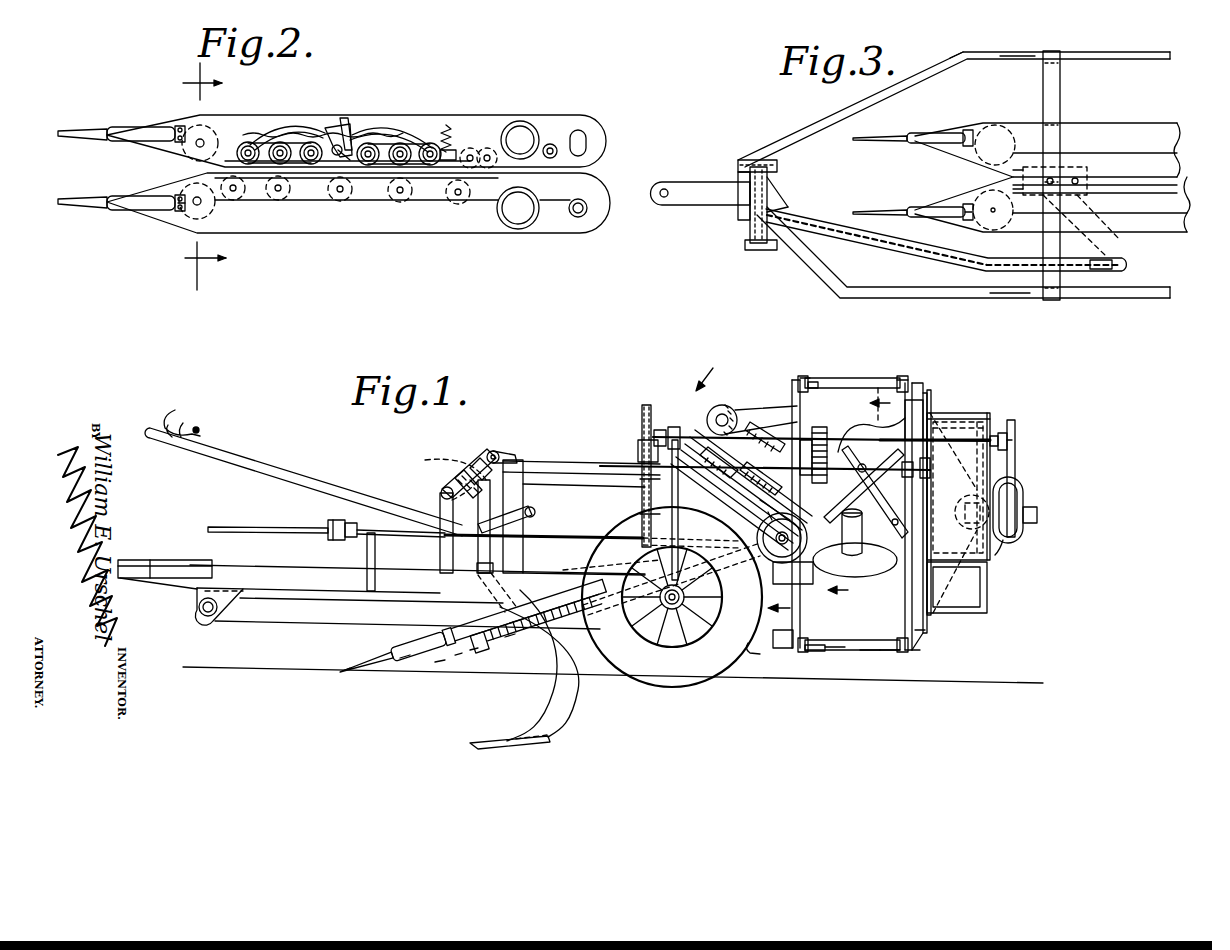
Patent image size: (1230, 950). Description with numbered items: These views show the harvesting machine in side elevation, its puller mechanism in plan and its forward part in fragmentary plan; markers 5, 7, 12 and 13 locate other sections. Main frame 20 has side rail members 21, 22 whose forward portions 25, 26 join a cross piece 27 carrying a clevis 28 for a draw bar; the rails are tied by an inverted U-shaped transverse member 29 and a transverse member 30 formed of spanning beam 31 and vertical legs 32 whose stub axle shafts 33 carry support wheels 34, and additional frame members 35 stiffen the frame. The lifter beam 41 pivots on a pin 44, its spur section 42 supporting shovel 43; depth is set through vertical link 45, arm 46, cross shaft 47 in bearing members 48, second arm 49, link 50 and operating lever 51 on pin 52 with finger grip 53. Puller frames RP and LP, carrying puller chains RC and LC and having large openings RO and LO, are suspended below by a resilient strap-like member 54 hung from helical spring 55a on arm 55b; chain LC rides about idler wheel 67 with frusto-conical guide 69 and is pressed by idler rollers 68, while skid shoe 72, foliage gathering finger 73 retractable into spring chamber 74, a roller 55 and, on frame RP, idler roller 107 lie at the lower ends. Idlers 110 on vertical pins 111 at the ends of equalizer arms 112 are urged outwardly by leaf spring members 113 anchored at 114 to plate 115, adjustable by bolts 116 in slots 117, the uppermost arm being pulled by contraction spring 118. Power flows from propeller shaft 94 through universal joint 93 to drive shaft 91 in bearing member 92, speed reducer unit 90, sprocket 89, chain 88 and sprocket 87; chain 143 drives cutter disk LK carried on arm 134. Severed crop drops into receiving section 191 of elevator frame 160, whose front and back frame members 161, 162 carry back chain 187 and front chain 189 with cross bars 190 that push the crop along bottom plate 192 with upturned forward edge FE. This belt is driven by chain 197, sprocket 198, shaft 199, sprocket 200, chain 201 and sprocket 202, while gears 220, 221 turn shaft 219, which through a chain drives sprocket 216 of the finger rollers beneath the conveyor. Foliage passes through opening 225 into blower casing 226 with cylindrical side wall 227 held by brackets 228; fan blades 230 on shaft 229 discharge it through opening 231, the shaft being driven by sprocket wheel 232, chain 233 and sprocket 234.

In FIG. 1, the section line 5 is at (772, 432).
In FIG. 1, the section line 7 is at (743, 492).
In FIG. 2, the section line 12 is at (192, 176).
In FIG. 1, the section line 13 is at (852, 514).
In FIG. 3, the main frame 20 is at (955, 57).
In FIG. 1, the main frame 20 is at (228, 566).
In FIG. 3, the side rail member 21 is at (1012, 298).
In FIG. 1, the side rail member 21 is at (400, 590).
In FIG. 3, the side rail member 22 is at (1017, 56).
In FIG. 3, the inwardly directed forward portion 25 is at (812, 275).
In FIG. 3, the inwardly directed forward portion 26 is at (820, 120).
In FIG. 3, the short cross piece 27 is at (740, 172).
In FIG. 3, the clevis 28 is at (714, 205).
In FIG. 1, the clevis 28 is at (163, 560).
In FIG. 3, the inverted U-shaped transverse member 29 is at (1057, 85).
In FIG. 1, the inverted U-shaped transverse member 29 is at (525, 470).
In FIG. 1, the transverse frame member 30 is at (648, 490).
In FIG. 1, the spanning beam 31 is at (655, 479).
In FIG. 1, the vertical legs 32 is at (655, 514).
In FIG. 1, the stub axle shafts 33 is at (645, 643).
In FIG. 1, the support wheels 34 is at (705, 672).
In FIG. 1, the additional frame members 35 is at (588, 462).
In FIG. 3, the horizontal beam 41 is at (1080, 168).
In FIG. 1, the horizontal beam 41 is at (322, 622).
In FIG. 1, the spur section 42 is at (577, 700).
In FIG. 3, the shovel member 43 is at (915, 250).
In FIG. 1, the shovel member 43 is at (490, 742).
In FIG. 3, the pin 44 is at (758, 250).
In FIG. 1, the pin 44 is at (206, 617).
In FIG. 1, the vertical link 45 is at (440, 561).
In FIG. 1, the arm 46 is at (446, 486).
In FIG. 1, the cross shaft 47 is at (495, 450).
In FIG. 1, the bearing members 48 is at (513, 453).
In FIG. 1, the second arm 49 is at (475, 464).
In FIG. 1, the link 50 is at (466, 470).
In FIG. 1, the operating lever 51 is at (316, 478).
In FIG. 1, the pin 52 is at (536, 510).
In FIG. 1, the finger grip 53 is at (182, 420).
In FIG. 1, the inverted U-shaped resilient strap-like member 54 is at (493, 568).
In FIG. 2, the roller 55 is at (586, 215).
In FIG. 1, the helical spring 55a is at (440, 500).
In FIG. 1, the arm 55b is at (435, 461).
In FIG. 2, the idler wheel 67 is at (178, 215).
In FIG. 3, the idler wheel 67 is at (998, 228).
In FIG. 1, the idler wheel 67 is at (460, 660).
In FIG. 2, the idler rollers 68 is at (323, 210).
In FIG. 1, the inverted frusto-conical guide 69 is at (441, 668).
In FIG. 1, the skid shoe 72 is at (410, 662).
In FIG. 2, the foliage gathering finger 73 is at (78, 208).
In FIG. 1, the foliage gathering finger 73 is at (360, 675).
In FIG. 2, the spring chamber 74 is at (147, 200).
In FIG. 1, the spring chamber 74 is at (420, 650).
In FIG. 1, the sprocket 87 is at (710, 406).
In FIG. 1, the chain 88 is at (740, 412).
In FIG. 1, the sprocket 89 is at (768, 560).
In FIG. 1, the speed reducer unit 90 is at (800, 585).
In FIG. 1, the drive shaft 91 is at (577, 534).
In FIG. 1, the bearing member 92 is at (395, 545).
In FIG. 1, the universal joint 93 is at (331, 540).
In FIG. 1, the propeller shaft 94 is at (288, 527).
In FIG. 2, the idler roller 107 is at (208, 126).
In FIG. 3, the idler roller 107 is at (1008, 126).
In FIG. 1, the idler roller 107 is at (903, 380).
In FIG. 2, the idlers 110 is at (262, 146).
In FIG. 2, the vertical pins 111 is at (248, 142).
In FIG. 2, the equalizer arms 112 is at (412, 145).
In FIG. 2, the leaf spring members 113 is at (320, 122).
In FIG. 2, the anchorage 114 is at (340, 158).
In FIG. 2, the laterally adjustable plate 115 is at (345, 116).
In FIG. 2, the bolts 116 is at (335, 128).
In FIG. 2, the slots 117 is at (348, 145).
In FIG. 2, the contraction spring 118 is at (455, 128).
In FIG. 1, the arm 134 is at (863, 485).
In FIG. 1, the chain 143 is at (758, 422).
In FIG. 1, the elevator frame 160 is at (925, 648).
In FIG. 1, the front frame member 161 is at (787, 648).
In FIG. 1, the back frame member 162 is at (925, 630).
In FIG. 1, the back chain 187 is at (915, 652).
In FIG. 1, the front chain 189 is at (812, 380).
In FIG. 1, the angle iron cross bars 190 is at (870, 652).
In FIG. 1, the receiving section 191 is at (836, 650).
In FIG. 1, the bottom plate 192 is at (885, 652).
In FIG. 1, the chain 197 is at (795, 380).
In FIG. 1, the sprocket 198 is at (808, 378).
In FIG. 1, the shaft 199 is at (690, 445).
In FIG. 1, the sprocket 200 is at (647, 412).
In FIG. 1, the chain 201 is at (642, 455).
In FIG. 1, the sprocket 202 is at (661, 579).
In FIG. 1, the sprocket 216 is at (930, 420).
In FIG. 1, the shaft 219 is at (957, 500).
In FIG. 1, the gear 220 is at (848, 415).
In FIG. 1, the gear 221 is at (822, 426).
In FIG. 1, the opening 225 is at (910, 495).
In FIG. 1, the drum-like blower casing 226 is at (995, 412).
In FIG. 1, the cylindrical side wall 227 is at (960, 405).
In FIG. 1, the brackets 228 is at (915, 398).
In FIG. 1, the shaft 229 is at (1005, 545).
In FIG. 1, the blades 230 is at (972, 413).
In FIG. 1, the opening 231 is at (982, 603).
In FIG. 1, the sprocket wheel 232 is at (1025, 506).
In FIG. 1, the chain 233 is at (1016, 478).
In FIG. 1, the sprocket 234 is at (1010, 441).
In FIG. 2, the right puller frame RP is at (428, 112).
In FIG. 3, the right puller frame RP is at (960, 126).
In FIG. 2, the left puller frame LP is at (412, 234).
In FIG. 3, the left puller frame LP is at (942, 195).
In FIG. 1, the left puller frame LP is at (474, 656).
In FIG. 2, the large opening RO is at (537, 127).
In FIG. 2, the large opening LO is at (518, 230).
In FIG. 3, the puller chain RC is at (985, 172).
In FIG. 3, the puller chain LC is at (985, 188).
In FIG. 1, the puller chain LC is at (512, 640).
In FIG. 1, the cutter disk LK is at (862, 572).
In FIG. 1, the forward edge FE is at (759, 653).